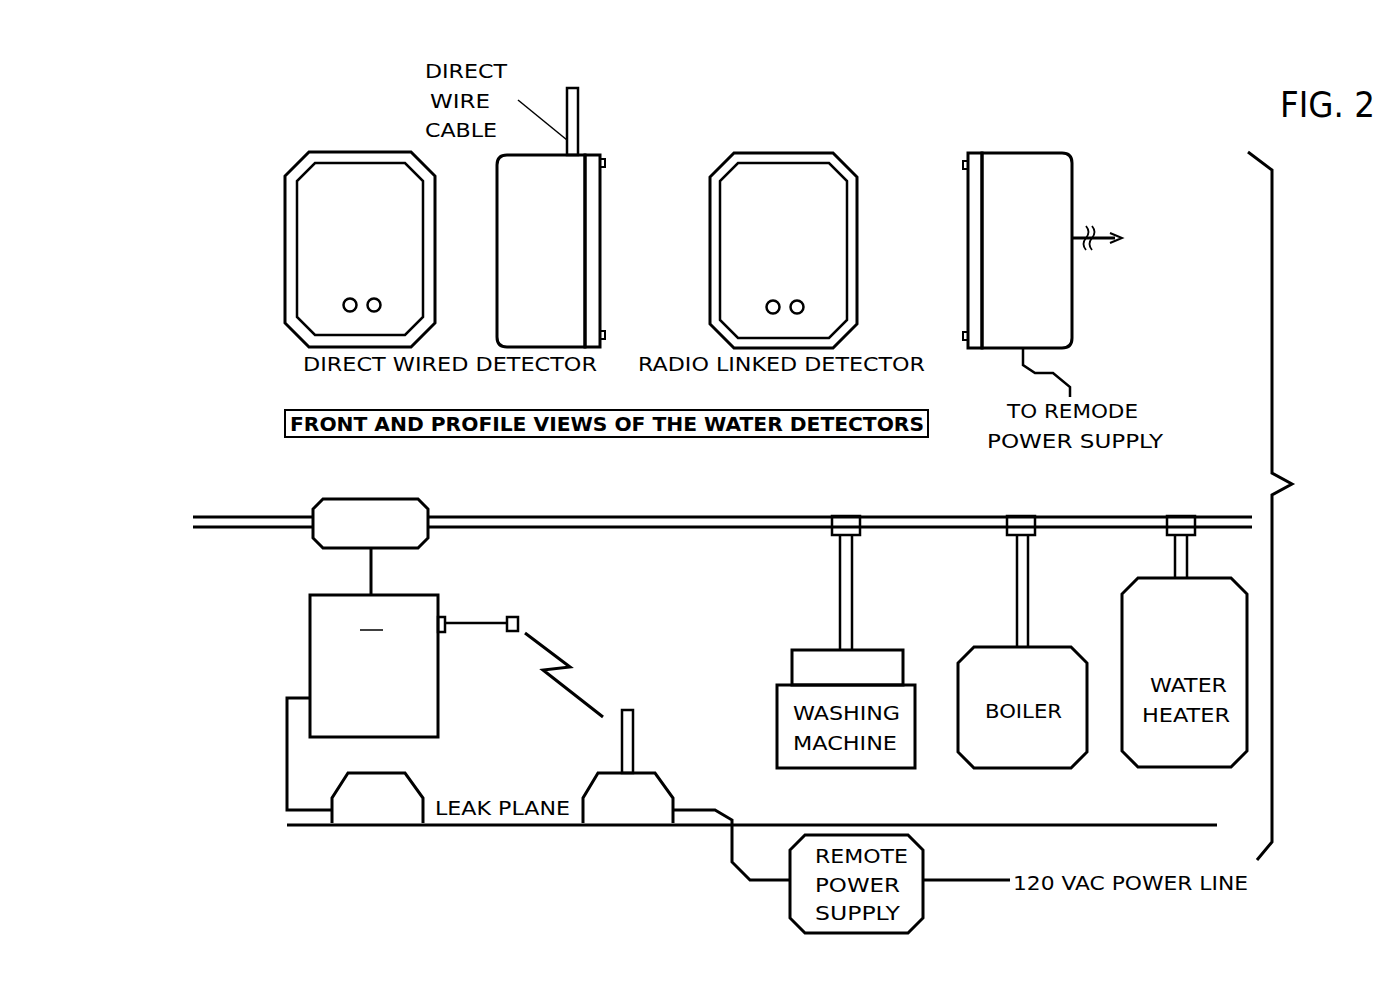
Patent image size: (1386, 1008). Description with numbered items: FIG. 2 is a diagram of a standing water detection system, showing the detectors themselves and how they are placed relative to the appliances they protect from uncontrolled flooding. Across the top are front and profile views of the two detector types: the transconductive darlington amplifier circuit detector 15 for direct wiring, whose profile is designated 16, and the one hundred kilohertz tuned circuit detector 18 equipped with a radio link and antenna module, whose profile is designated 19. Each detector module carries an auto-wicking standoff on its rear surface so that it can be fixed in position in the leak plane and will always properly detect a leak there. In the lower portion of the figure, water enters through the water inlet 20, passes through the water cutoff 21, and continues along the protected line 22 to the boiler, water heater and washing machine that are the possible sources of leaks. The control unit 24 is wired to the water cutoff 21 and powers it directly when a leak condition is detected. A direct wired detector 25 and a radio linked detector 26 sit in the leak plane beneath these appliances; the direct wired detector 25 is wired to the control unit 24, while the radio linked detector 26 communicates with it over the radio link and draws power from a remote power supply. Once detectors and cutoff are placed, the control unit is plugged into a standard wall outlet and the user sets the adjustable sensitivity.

The transconductive darlington amplifier circuit detector 15 is at (285, 212).
The profile of direct wired detector 16 is at (556, 286).
The 100 kHz tuned circuit detector 18 is at (710, 242).
The profile of radio linked detector 19 is at (1103, 232).
The water inlet 20 is at (205, 528).
The water cutoff 21 is at (380, 499).
The protected line 22 is at (670, 528).
The control unit 24 is at (310, 668).
The direct wired detector 25 is at (415, 782).
The radio linked detector 26 is at (645, 773).